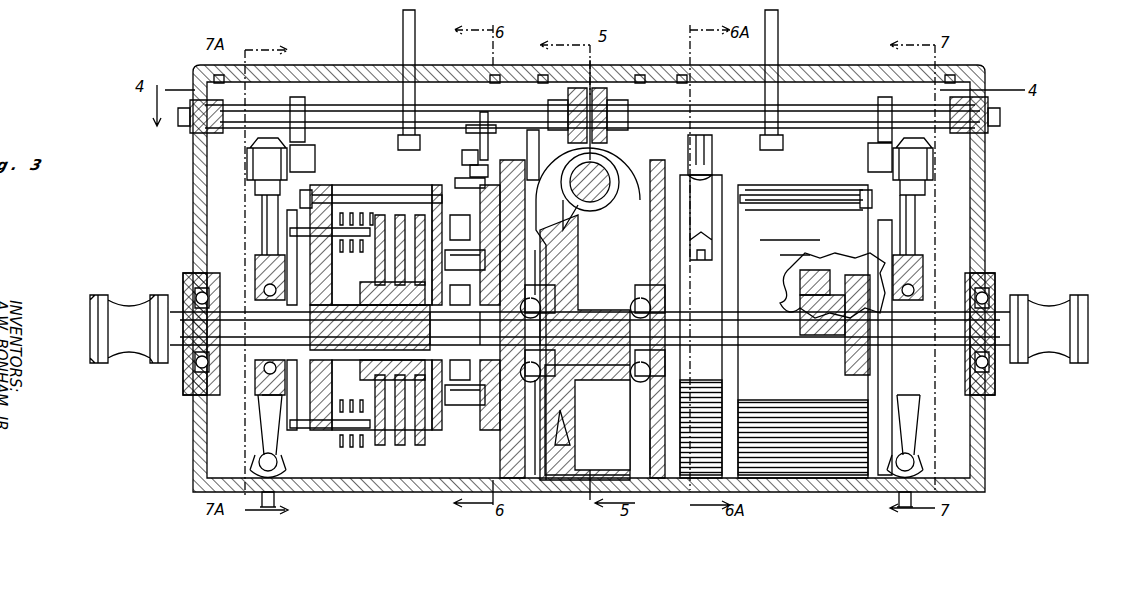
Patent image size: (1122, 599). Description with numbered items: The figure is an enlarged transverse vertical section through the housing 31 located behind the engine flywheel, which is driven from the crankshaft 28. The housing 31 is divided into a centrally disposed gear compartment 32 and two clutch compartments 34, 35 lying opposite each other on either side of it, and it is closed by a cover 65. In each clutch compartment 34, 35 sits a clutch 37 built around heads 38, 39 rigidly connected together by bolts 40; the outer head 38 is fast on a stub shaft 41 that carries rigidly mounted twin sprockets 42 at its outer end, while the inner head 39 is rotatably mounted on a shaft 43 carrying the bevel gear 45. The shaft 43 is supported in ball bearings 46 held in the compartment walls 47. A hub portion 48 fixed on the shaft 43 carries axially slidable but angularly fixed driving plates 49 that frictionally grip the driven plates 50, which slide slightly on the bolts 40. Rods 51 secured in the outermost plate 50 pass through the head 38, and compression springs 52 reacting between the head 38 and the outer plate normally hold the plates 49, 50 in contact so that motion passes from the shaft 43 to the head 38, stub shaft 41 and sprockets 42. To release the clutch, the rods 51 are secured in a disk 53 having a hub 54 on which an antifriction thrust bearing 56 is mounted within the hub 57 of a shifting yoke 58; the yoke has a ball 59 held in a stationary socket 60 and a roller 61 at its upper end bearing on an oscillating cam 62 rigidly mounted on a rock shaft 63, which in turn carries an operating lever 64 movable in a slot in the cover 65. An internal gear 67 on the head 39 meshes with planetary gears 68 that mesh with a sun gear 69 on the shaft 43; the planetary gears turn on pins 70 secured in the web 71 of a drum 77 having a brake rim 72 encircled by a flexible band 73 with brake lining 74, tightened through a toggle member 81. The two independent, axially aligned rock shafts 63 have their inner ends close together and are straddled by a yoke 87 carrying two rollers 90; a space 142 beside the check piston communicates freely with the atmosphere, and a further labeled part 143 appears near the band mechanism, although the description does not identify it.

The crankshaft 28 is at (608, 180).
The housing 31 is at (203, 225).
The gear compartment 32 is at (585, 347).
The clutch compartment 34 is at (349, 155).
The clutch compartment 35 is at (804, 163).
The clutch 37 is at (385, 188).
The head 38 is at (325, 267).
The inner clutch head 39 is at (740, 190).
The bolts 40 is at (345, 458).
The stub shaft 41 is at (185, 333).
The twin sprockets 42 is at (1049, 360).
The shaft 43 is at (590, 327).
The bevel gear 45 is at (560, 345).
The ball bearings 46 is at (593, 362).
The compartment walls 47 is at (650, 245).
The hub portion 48 is at (363, 292).
The driving plates 49 is at (360, 378).
The driven plates 50 is at (365, 473).
The rods 51 is at (328, 320).
The compression springs 52 is at (380, 330).
The disk 53 is at (888, 215).
The hub 54 is at (248, 295).
The antifriction thrust bearing 56 is at (258, 378).
The hub 57 is at (263, 410).
The shifting yoke 58 is at (260, 425).
The ball 59 is at (257, 463).
The socket 60 is at (252, 475).
The roller 61 is at (248, 165).
The cam 62 is at (316, 160).
The rock shaft 63 is at (312, 114).
The operating lever 64 is at (415, 20).
The cover 65 is at (400, 70).
The internal gear 67 is at (462, 180).
The planetary gears 68 is at (465, 170).
The sun gear 69 is at (415, 360).
The pins 70 is at (472, 328).
The web 71 is at (475, 297).
The brake rim 72 is at (532, 488).
The flexible band 73 is at (624, 304).
The brake lining 74 is at (563, 190).
The drum 77 is at (588, 314).
The toggle member 81 is at (482, 140).
The yoke 87 is at (560, 98).
The rollers 90 is at (600, 93).
The space 142 is at (822, 329).
The link 143 is at (464, 145).